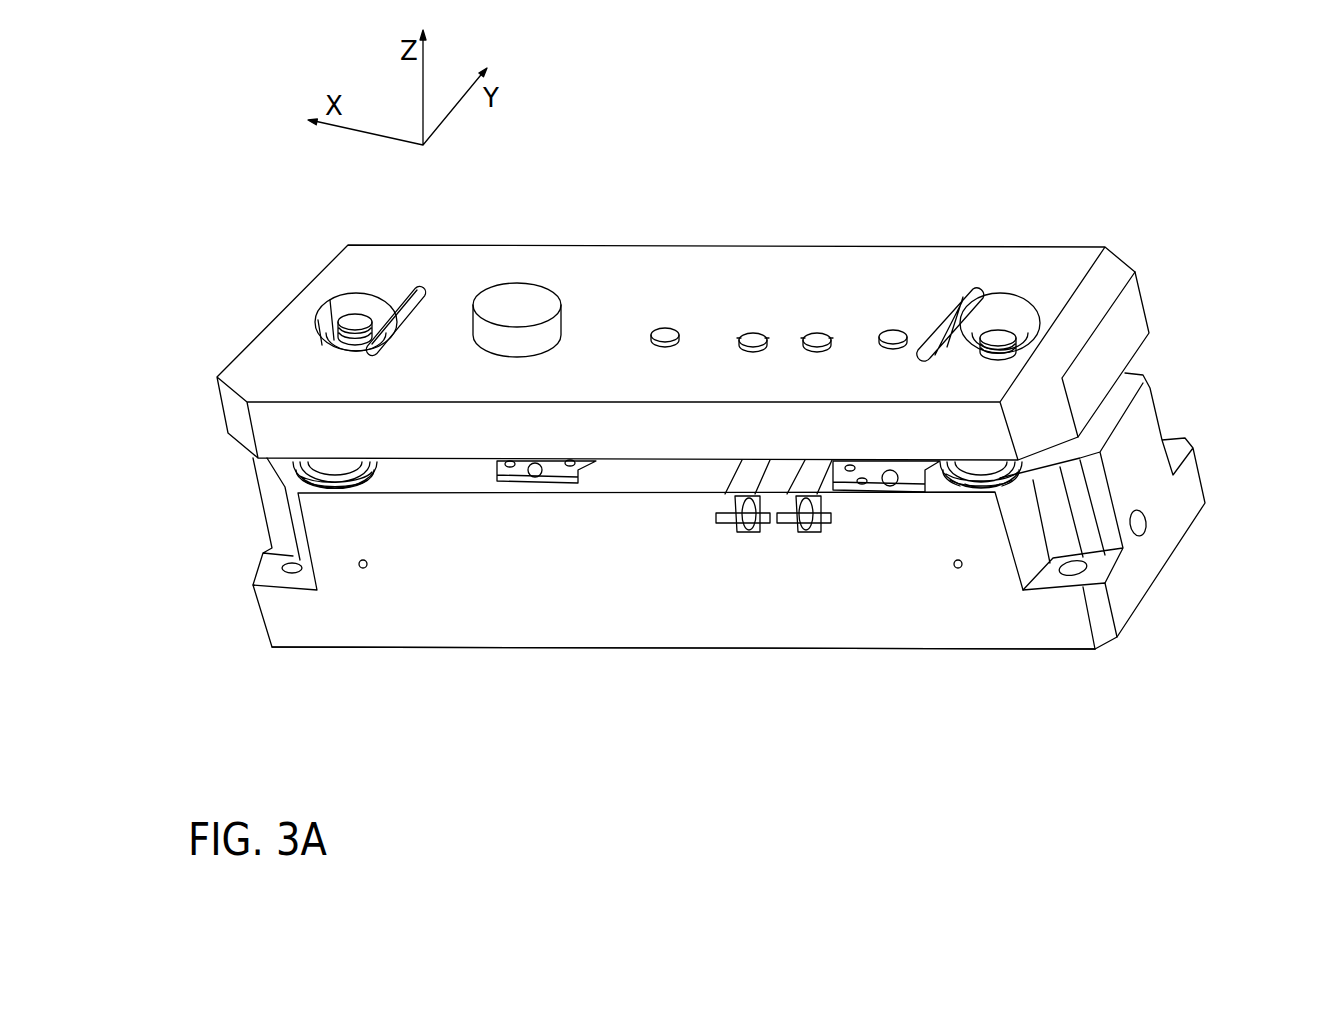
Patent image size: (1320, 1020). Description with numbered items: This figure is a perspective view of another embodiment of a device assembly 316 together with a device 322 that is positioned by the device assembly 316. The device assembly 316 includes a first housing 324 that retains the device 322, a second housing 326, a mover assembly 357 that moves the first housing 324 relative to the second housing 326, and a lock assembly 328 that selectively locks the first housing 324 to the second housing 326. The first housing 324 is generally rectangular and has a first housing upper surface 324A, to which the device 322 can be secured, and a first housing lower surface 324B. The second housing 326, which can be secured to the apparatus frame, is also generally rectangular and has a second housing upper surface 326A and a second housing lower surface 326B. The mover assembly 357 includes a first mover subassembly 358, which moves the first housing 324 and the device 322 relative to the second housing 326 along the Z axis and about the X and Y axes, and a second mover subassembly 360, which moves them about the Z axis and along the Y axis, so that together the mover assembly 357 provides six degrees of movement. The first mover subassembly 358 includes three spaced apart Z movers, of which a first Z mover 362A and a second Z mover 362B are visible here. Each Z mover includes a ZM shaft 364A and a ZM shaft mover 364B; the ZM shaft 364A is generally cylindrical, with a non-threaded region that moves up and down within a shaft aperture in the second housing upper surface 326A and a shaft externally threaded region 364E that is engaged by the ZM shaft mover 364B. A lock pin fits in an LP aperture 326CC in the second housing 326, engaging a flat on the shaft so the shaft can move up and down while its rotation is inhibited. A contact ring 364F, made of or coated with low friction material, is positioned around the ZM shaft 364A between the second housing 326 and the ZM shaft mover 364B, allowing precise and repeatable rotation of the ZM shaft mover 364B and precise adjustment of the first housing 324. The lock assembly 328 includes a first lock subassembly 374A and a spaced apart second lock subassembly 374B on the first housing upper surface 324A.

The device assembly 316 is at (1007, 220).
The device 322 is at (518, 292).
The first housing 324 is at (664, 254).
The first housing upper surface 324A is at (735, 265).
The first housing lower surface 324B is at (1147, 342).
The second housing 326 is at (611, 630).
The second housing upper surface 326A is at (435, 482).
The second housing lower surface 326B is at (527, 652).
The LP aperture 326CC is at (362, 570).
The lock assembly 328 is at (365, 315).
The mover assembly 357 is at (285, 474).
The first mover subassembly 358 is at (286, 479).
The second mover subassembly 360 is at (507, 476).
The first Z mover 362A is at (310, 461).
The second Z mover 362B is at (1022, 461).
The ZM shaft 364A is at (957, 482).
The ZM shaft mover 364B is at (982, 482).
The shaft externally threaded region 364E is at (943, 482).
The contact ring 364F is at (1015, 478).
The first lock subassembly 374A is at (355, 317).
The second lock subassembly 374B is at (988, 324).